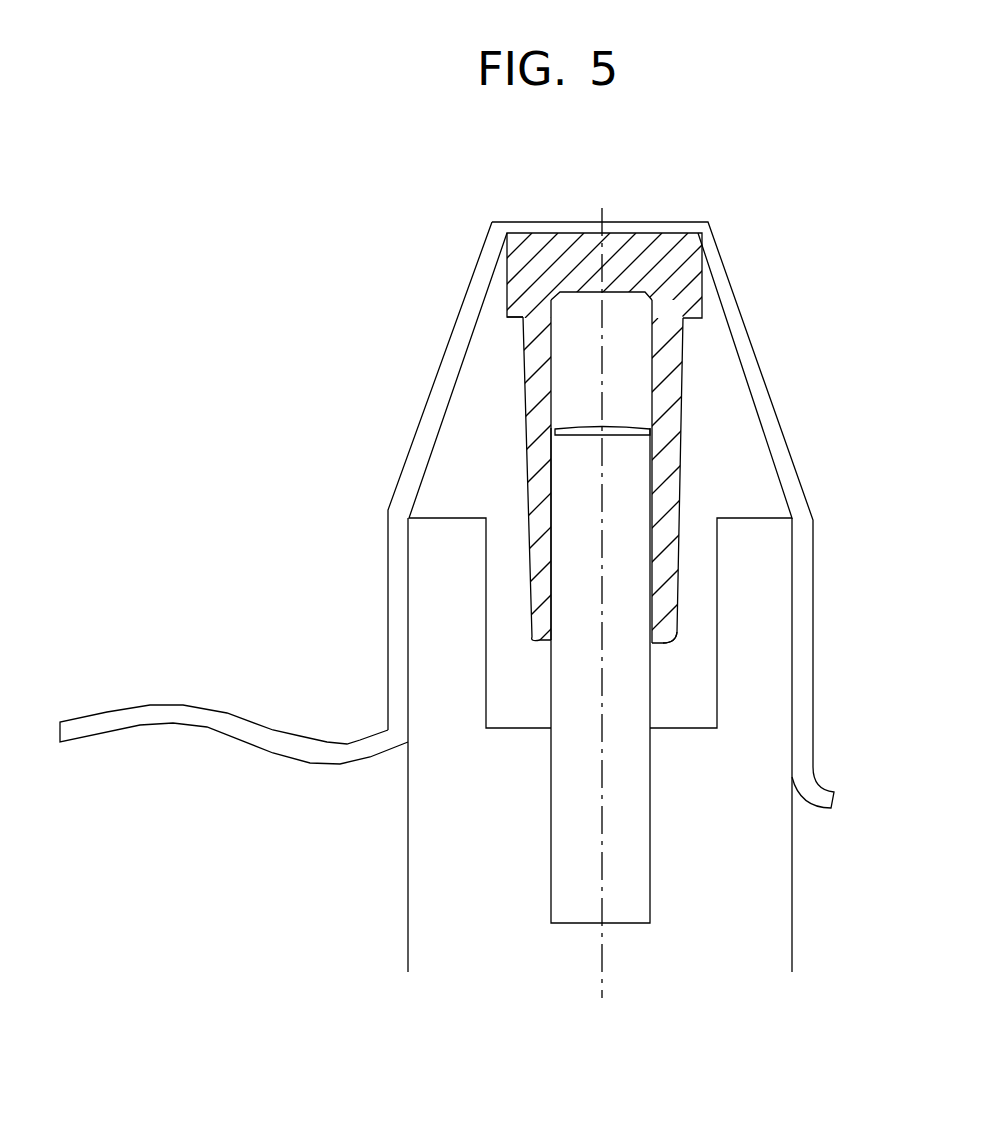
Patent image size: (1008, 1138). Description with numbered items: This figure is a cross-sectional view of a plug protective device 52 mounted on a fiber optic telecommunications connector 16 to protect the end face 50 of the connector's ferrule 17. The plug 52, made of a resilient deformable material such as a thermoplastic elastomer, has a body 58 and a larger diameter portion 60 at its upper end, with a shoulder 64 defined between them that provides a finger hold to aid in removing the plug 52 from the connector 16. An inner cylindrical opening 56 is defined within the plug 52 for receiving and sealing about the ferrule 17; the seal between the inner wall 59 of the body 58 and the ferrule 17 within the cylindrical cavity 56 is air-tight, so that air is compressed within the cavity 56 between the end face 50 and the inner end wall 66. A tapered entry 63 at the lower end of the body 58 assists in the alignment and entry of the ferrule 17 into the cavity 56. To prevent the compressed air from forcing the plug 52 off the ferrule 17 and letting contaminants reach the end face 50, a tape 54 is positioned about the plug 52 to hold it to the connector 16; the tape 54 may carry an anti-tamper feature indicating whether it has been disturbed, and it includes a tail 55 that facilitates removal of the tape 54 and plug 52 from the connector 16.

The telecommunications connector 16 is at (440, 893).
The ferrule 17 is at (625, 890).
The end face 50 is at (557, 427).
The plug protective device 52 is at (687, 450).
The tape 54 is at (393, 490).
The tail 55 is at (95, 720).
The inner cylindrical opening 56 is at (618, 335).
The body 58 is at (677, 510).
The inner wall 59 is at (555, 378).
The larger diameter portion 60 is at (525, 272).
The tapered entry 63 is at (665, 641).
The shoulder 64 is at (518, 318).
The inner end wall 66 is at (633, 292).